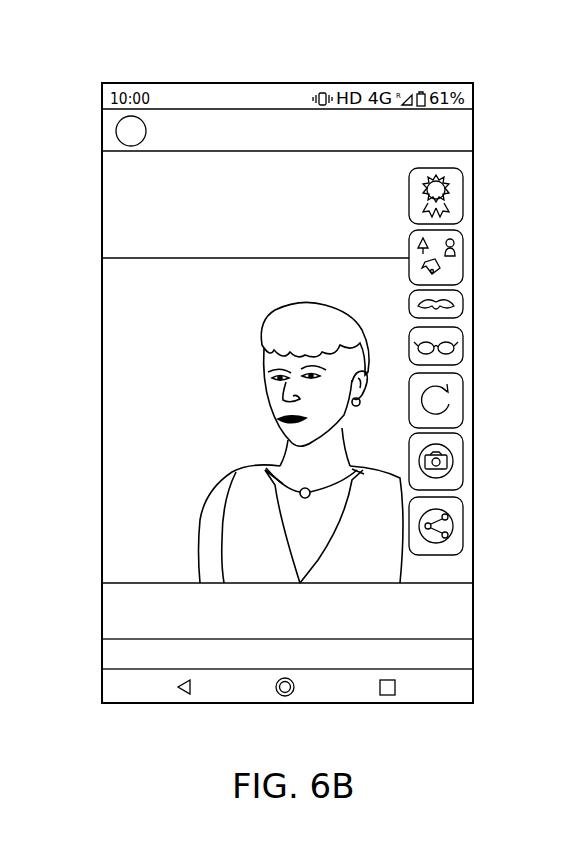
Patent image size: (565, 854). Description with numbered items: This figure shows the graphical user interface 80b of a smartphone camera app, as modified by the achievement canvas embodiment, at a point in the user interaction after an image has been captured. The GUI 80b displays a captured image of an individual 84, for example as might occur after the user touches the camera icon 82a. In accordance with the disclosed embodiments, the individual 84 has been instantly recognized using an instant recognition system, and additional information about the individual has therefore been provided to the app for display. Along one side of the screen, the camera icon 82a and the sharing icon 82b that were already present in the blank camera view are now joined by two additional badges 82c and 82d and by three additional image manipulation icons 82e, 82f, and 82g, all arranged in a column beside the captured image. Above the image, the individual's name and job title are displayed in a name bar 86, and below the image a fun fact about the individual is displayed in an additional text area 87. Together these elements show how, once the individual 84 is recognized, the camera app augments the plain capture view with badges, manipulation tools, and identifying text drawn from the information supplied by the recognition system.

The graphical user interface 80b is at (118, 60).
The camera icon 82a is at (463, 443).
The sharing icon 82b is at (463, 522).
The badge 82c is at (463, 178).
The badge 82d is at (463, 238).
The image manipulation icon 82e is at (463, 296).
The image manipulation icon 82f is at (463, 332).
The image manipulation icon 82g is at (463, 390).
The individual 84 is at (102, 358).
The name bar 86 is at (108, 131).
The additional text area 87 is at (140, 654).